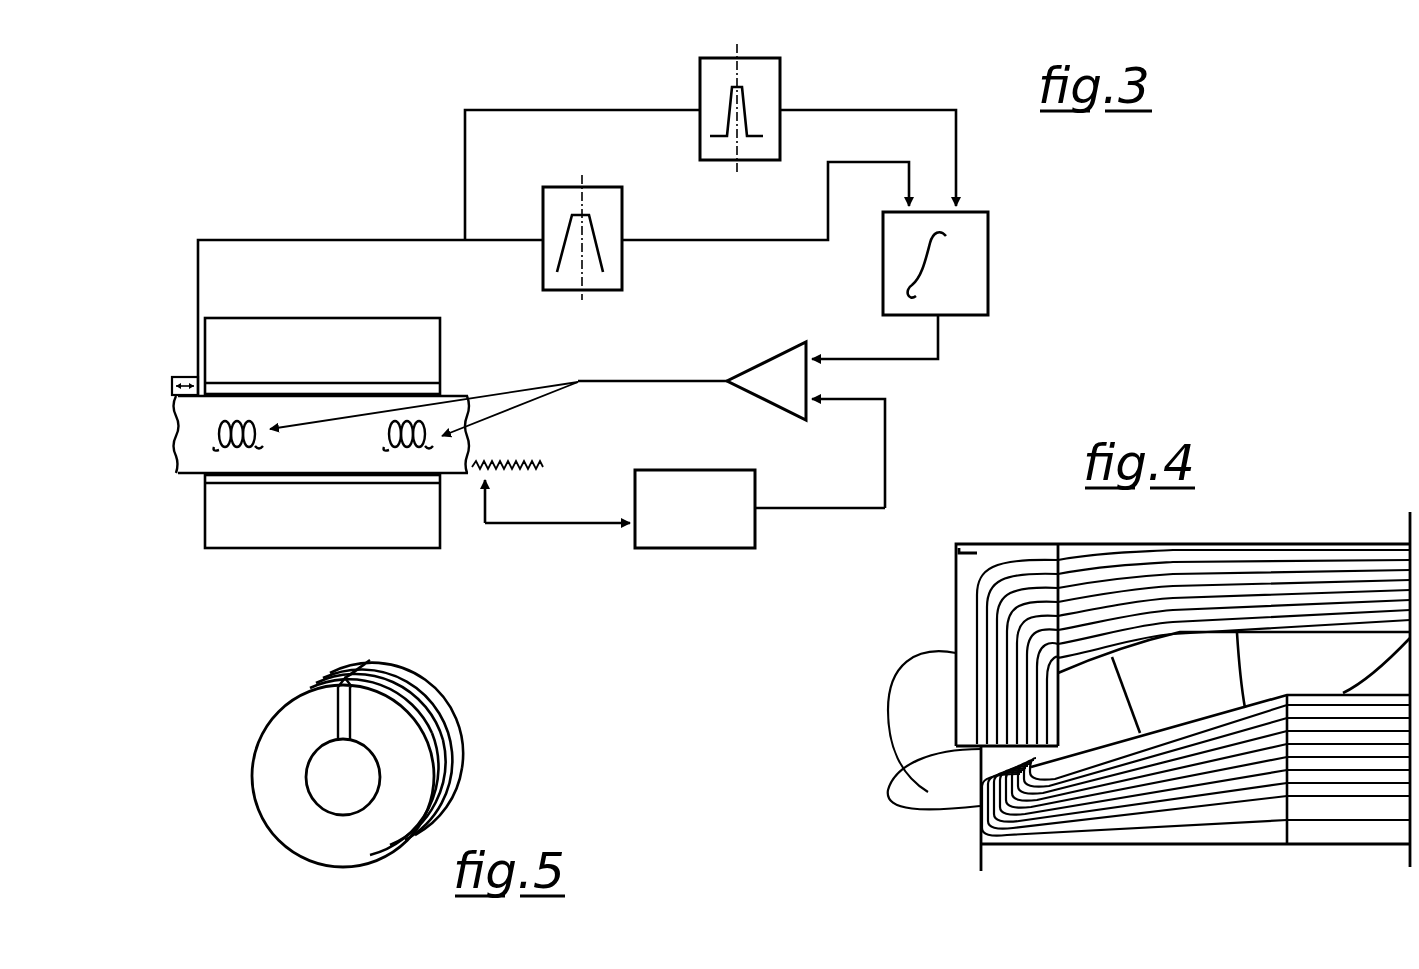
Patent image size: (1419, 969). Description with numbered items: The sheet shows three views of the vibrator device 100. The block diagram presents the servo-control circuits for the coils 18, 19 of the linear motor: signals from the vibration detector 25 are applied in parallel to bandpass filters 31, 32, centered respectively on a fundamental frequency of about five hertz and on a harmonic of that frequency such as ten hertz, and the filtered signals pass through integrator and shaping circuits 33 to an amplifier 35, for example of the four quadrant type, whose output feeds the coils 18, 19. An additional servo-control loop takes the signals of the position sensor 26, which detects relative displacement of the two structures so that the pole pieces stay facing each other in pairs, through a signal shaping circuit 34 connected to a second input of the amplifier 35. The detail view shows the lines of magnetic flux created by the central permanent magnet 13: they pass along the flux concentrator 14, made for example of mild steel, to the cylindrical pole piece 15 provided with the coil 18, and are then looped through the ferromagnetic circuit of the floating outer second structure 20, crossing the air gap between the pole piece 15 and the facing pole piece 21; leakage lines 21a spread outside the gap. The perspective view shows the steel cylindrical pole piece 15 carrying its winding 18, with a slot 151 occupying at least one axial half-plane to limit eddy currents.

In FIG. 4, the cylindrical permanent magnet 13 is at (1325, 822).
In FIG. 4, the body of revolution 14 is at (1173, 748).
In FIG. 4, the cylindrical pole piece 15 is at (993, 778).
In FIG. 5, the cylindrical pole piece 15 is at (282, 738).
In FIG. 3, the coil 18 is at (213, 428).
In FIG. 5, the coil 18 is at (418, 696).
In FIG. 3, the coil 19 is at (386, 443).
In FIG. 4, the second structure 20 is at (1006, 562).
In FIG. 4, the pole piece 21 is at (966, 728).
In FIG. 4, the leakage field lines 21a is at (900, 768).
In FIG. 3, the accelerometer 25 is at (192, 378).
In FIG. 3, the position sensor 26 is at (508, 460).
In FIG. 3, the bandpass filter 31 is at (622, 232).
In FIG. 3, the bandpass filter 32 is at (780, 88).
In FIG. 3, the integrator and shaping circuits 33 is at (983, 252).
In FIG. 3, the signal shaping circuit 34 is at (745, 536).
In FIG. 3, the amplifier 35 is at (768, 367).
In FIG. 3, the vibrator device 100 is at (190, 490).
In FIG. 5, the slot 151 is at (355, 712).